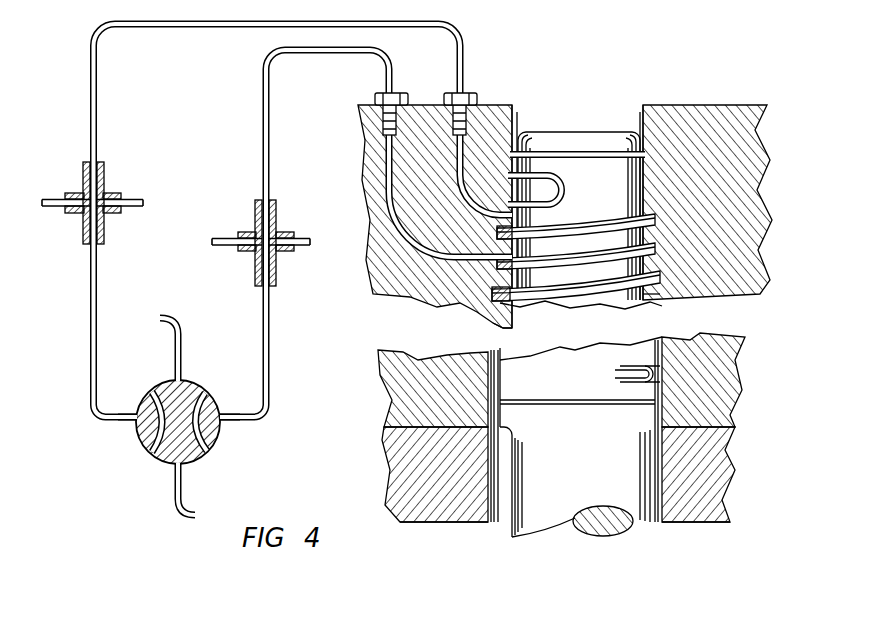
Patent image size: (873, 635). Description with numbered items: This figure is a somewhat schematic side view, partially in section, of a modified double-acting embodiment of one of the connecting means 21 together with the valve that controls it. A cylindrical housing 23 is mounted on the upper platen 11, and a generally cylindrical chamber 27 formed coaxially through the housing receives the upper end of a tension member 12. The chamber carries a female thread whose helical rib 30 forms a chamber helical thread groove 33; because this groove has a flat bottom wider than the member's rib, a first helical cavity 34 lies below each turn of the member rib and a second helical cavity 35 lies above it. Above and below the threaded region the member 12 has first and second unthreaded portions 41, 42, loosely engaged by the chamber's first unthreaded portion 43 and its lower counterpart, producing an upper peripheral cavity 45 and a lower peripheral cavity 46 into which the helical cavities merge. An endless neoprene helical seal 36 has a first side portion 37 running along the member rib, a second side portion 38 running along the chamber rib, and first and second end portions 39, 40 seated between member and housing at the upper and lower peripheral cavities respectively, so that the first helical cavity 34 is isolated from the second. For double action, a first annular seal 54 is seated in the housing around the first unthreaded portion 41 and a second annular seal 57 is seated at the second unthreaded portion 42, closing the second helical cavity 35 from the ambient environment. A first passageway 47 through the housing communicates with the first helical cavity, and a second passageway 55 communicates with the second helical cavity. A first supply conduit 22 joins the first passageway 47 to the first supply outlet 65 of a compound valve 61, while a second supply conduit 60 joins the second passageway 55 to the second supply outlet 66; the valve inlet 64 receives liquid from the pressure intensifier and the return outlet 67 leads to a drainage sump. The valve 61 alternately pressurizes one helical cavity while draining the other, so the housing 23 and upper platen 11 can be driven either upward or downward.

The upper platen 11 is at (688, 523).
The tension member 12 is at (515, 536).
The connecting means 21 is at (765, 215).
The first supply conduit 22 is at (321, 50).
The cylindrical housing 23 is at (705, 105).
The chamber 27 is at (579, 183).
The helical rib 30 is at (508, 328).
The chamber helical thread groove 33 is at (648, 300).
The first helical cavity 34 is at (652, 222).
The second helical cavity 35 is at (494, 284).
The helical seal 36 is at (578, 288).
The first side portion of seal 37 is at (661, 276).
The second side portion of seal 38 is at (657, 247).
The first end portion of seal 39 is at (556, 193).
The second end portion of seal 40 is at (614, 376).
The first unthreaded portion of member 41 is at (598, 198).
The second unthreaded portion of member 42 is at (575, 388).
The first unthreaded portion of chamber 43 is at (641, 120).
The upper peripheral cavity 45 is at (514, 128).
The lower peripheral cavity 46 is at (698, 474).
The first passageway 47 is at (413, 226).
The first annular seal 54 is at (646, 155).
The second passageway 55 is at (452, 148).
The second annular seal 57 is at (500, 402).
The second supply conduit 60 is at (183, 28).
The compound valve 61 is at (140, 440).
The valve inlet 64 is at (172, 473).
The first supply outlet 65 is at (233, 424).
The second supply outlet 66 is at (127, 417).
The return outlet 67 is at (181, 368).